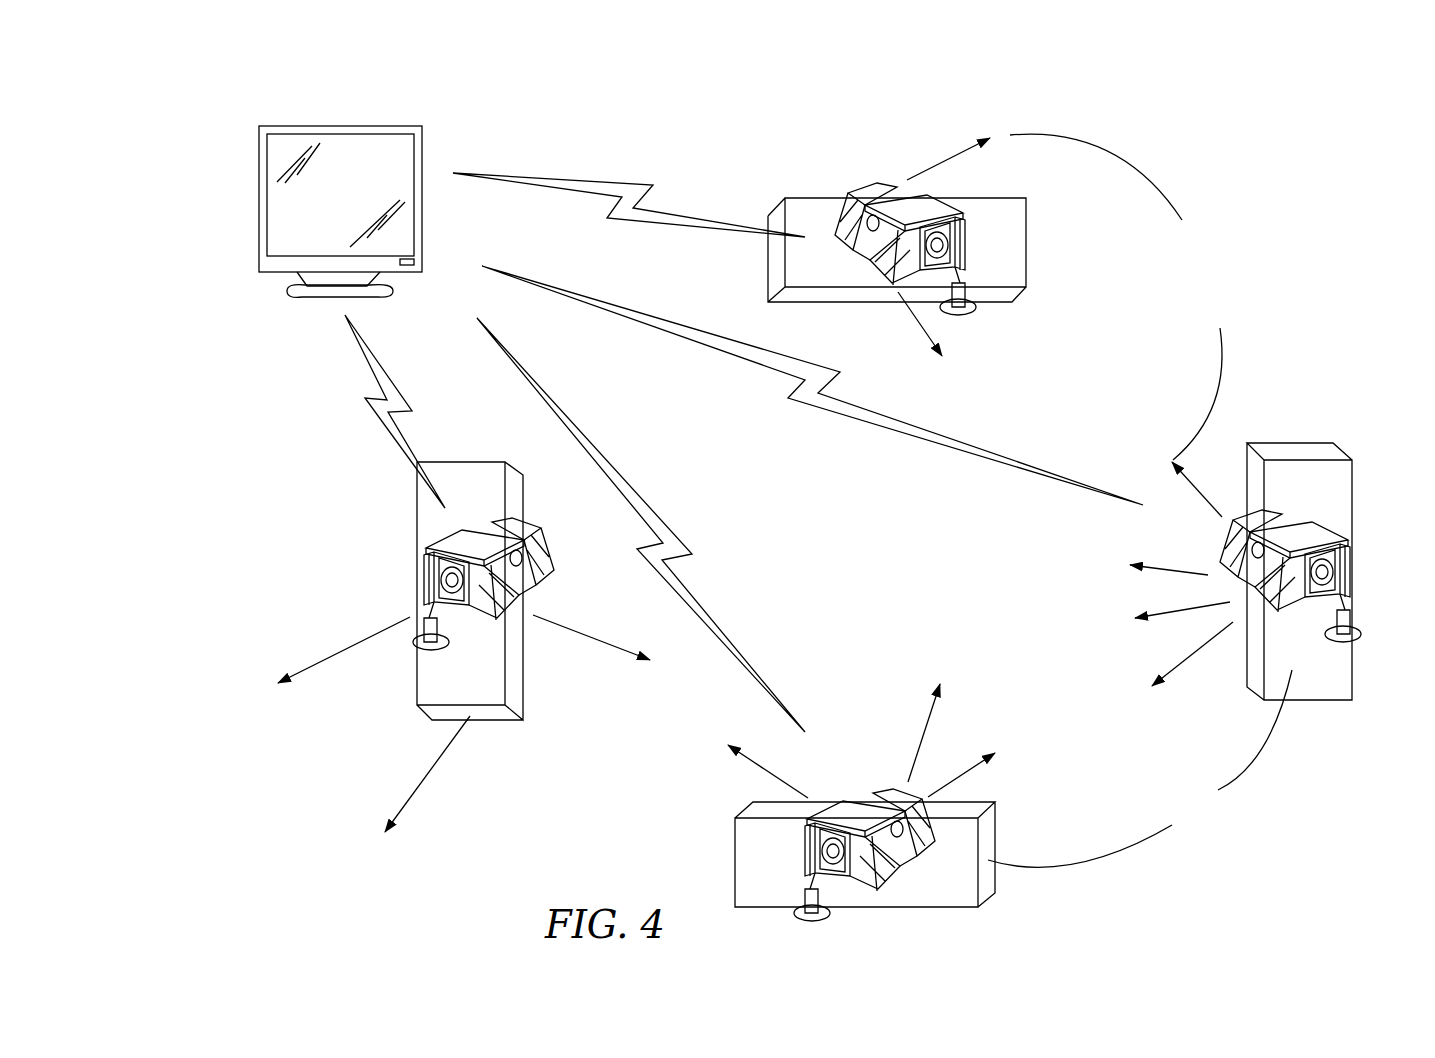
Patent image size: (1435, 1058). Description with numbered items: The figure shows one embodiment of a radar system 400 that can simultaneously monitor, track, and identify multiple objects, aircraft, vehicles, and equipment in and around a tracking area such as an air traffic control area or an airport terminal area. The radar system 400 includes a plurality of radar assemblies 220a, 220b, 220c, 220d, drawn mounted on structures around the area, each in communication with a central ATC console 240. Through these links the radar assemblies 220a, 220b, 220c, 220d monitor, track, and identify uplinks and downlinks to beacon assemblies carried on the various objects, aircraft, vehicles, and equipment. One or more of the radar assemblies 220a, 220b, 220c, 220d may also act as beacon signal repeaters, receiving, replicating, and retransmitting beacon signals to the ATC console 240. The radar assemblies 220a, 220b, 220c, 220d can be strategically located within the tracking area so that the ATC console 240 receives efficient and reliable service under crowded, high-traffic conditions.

The radar system 400 is at (192, 138).
The ATC console 240 is at (258, 242).
The radar assembly 220a is at (868, 190).
The radar assembly 220b is at (1318, 535).
The radar assembly 220c is at (893, 790).
The radar assembly 220d is at (527, 527).